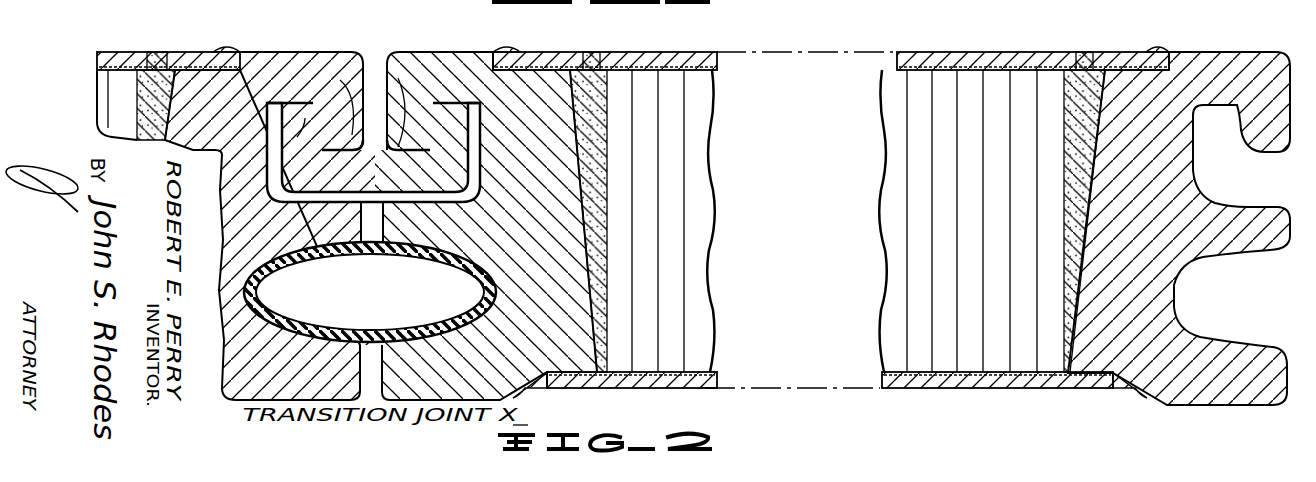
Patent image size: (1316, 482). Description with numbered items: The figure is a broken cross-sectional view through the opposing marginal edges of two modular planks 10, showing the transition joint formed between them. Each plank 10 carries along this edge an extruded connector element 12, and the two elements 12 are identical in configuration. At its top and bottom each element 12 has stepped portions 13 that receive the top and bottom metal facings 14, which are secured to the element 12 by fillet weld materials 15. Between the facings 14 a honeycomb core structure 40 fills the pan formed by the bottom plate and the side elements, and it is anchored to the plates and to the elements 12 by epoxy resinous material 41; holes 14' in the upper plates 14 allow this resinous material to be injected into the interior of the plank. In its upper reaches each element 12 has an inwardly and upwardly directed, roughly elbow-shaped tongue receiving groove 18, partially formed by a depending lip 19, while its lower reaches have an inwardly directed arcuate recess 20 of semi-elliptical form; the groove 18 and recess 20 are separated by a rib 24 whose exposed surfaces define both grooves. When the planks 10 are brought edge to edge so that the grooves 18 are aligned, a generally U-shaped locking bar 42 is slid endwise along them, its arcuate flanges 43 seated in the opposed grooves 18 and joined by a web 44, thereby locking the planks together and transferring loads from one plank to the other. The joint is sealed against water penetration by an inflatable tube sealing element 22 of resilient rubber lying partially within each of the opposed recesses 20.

The modular plank 10 is at (722, 52).
The extruded connector element 12 is at (310, 52).
The stepped portion 13 is at (553, 66).
The metal facing 14 is at (633, 224).
The hole 14' is at (606, 192).
The fillet weld material 15 is at (230, 47).
The tongue receiving groove 18 is at (273, 133).
The depending lip 19 is at (372, 52).
The arcuate recess 20 is at (296, 256).
The inflatable tube sealing element 22 is at (373, 256).
The rib 24 is at (343, 226).
The honeycomb core structure 40 is at (913, 190).
The epoxy resinous material 41 is at (135, 89).
The locking bar 42 is at (473, 188).
The flange 43 is at (293, 140).
The web 44 is at (357, 188).